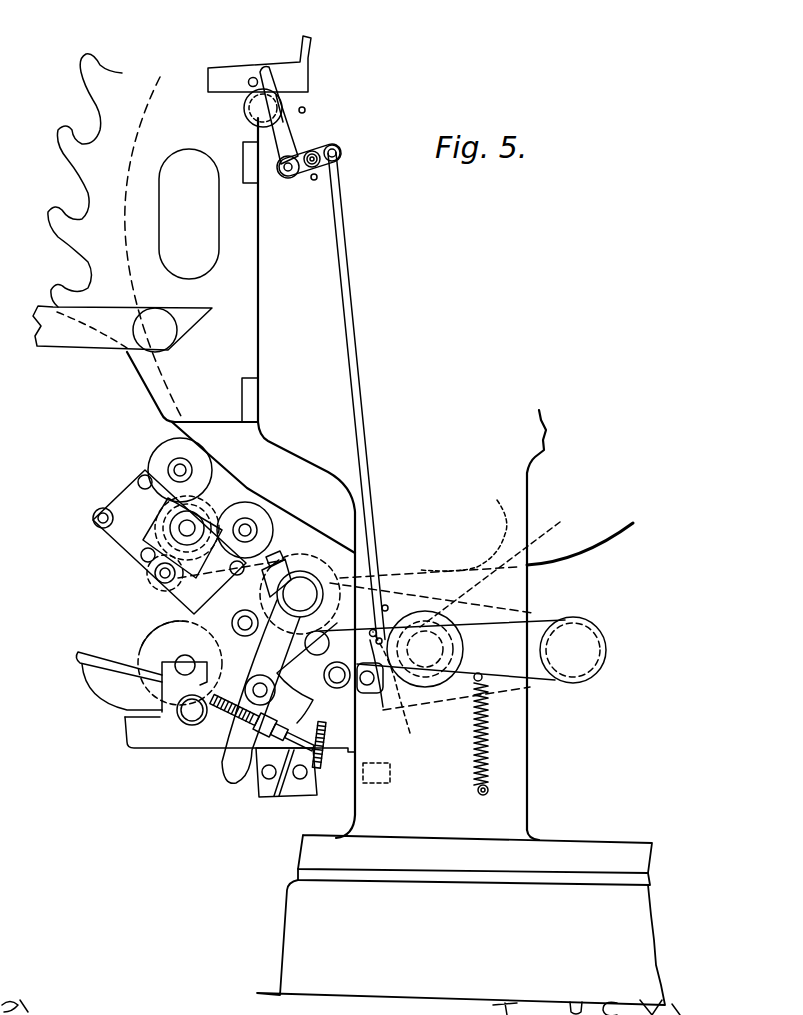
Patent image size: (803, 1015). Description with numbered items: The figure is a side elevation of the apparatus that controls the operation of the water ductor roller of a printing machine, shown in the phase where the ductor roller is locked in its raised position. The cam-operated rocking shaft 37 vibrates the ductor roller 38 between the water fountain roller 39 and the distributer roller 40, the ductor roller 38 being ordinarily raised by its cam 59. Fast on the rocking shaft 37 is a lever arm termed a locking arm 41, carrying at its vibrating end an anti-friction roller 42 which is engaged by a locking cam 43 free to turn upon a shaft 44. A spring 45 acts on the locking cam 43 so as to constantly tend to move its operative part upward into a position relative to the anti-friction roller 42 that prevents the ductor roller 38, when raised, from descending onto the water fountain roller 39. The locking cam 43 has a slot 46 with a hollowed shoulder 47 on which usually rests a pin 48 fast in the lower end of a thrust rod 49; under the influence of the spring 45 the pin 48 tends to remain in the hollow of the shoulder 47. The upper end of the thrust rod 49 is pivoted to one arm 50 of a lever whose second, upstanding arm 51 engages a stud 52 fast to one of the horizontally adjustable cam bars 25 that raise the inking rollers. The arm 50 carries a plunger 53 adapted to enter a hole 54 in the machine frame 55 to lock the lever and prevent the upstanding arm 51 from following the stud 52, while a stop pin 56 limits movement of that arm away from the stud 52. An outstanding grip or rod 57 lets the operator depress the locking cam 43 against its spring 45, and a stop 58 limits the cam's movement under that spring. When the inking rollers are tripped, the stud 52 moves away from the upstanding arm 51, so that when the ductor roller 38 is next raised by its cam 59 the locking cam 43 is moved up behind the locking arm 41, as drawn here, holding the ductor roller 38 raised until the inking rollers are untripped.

The cam bar 25 is at (309, 55).
The rocking shaft 37 is at (272, 677).
The ductor roller 38 is at (146, 577).
The water fountain roller 39 is at (163, 627).
The distributer roller 40 is at (203, 503).
The locking arm 41 is at (331, 582).
The anti-friction roller 42 is at (320, 688).
The locking cam 43 is at (376, 634).
The shaft 44 is at (513, 595).
The spring 45 is at (487, 732).
The slot 46 is at (383, 707).
The shoulder 47 is at (395, 720).
The pin 48 is at (465, 524).
The thrust rod 49 is at (360, 401).
The lever arm 50 is at (299, 176).
The upstanding arm 51 is at (283, 120).
The stud 52 is at (253, 77).
The plunger 53 is at (315, 151).
The hole 54 is at (318, 178).
The machine frame 55 is at (447, 425).
The stop pin 56 is at (306, 110).
The grip 57 is at (358, 720).
The stop 58 is at (386, 605).
The cam 59 is at (227, 723).